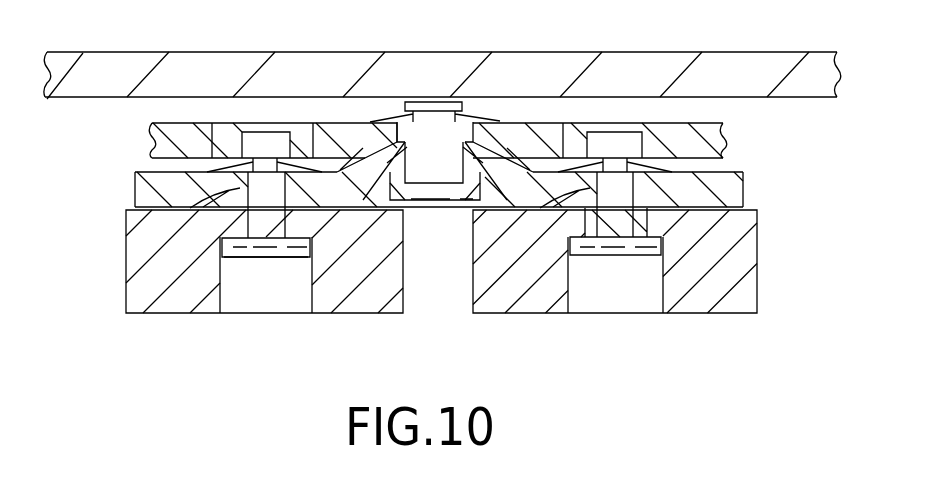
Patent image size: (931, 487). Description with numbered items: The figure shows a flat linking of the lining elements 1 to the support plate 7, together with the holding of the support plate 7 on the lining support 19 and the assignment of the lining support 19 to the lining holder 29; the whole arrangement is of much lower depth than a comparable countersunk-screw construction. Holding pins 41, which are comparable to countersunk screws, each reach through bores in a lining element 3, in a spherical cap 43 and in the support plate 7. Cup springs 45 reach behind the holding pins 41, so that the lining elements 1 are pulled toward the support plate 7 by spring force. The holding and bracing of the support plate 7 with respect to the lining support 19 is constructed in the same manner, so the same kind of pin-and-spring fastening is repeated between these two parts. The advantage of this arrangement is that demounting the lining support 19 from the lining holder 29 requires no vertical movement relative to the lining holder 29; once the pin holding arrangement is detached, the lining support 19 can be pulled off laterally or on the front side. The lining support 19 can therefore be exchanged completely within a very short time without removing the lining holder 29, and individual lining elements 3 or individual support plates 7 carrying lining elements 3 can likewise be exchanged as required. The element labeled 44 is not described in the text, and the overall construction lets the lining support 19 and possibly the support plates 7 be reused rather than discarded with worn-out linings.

The lining elements 1 is at (787, 280).
The lining element 3 is at (336, 297).
The support plate 7 is at (728, 190).
The lining support 19 is at (708, 140).
The lining holder 29 is at (564, 67).
The holding pins 41 is at (593, 245).
The spherical cap 43 is at (246, 233).
The nut 44 is at (249, 249).
The cup springs 45 is at (208, 173).